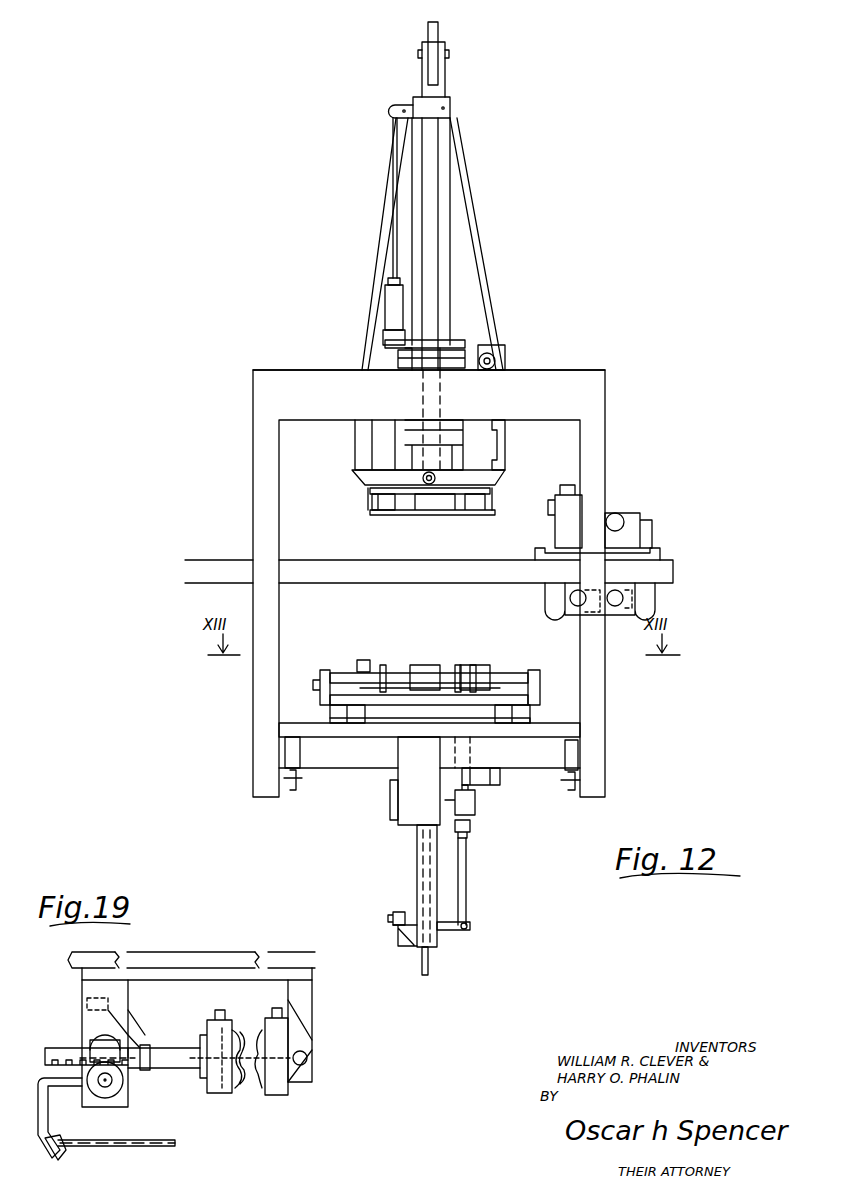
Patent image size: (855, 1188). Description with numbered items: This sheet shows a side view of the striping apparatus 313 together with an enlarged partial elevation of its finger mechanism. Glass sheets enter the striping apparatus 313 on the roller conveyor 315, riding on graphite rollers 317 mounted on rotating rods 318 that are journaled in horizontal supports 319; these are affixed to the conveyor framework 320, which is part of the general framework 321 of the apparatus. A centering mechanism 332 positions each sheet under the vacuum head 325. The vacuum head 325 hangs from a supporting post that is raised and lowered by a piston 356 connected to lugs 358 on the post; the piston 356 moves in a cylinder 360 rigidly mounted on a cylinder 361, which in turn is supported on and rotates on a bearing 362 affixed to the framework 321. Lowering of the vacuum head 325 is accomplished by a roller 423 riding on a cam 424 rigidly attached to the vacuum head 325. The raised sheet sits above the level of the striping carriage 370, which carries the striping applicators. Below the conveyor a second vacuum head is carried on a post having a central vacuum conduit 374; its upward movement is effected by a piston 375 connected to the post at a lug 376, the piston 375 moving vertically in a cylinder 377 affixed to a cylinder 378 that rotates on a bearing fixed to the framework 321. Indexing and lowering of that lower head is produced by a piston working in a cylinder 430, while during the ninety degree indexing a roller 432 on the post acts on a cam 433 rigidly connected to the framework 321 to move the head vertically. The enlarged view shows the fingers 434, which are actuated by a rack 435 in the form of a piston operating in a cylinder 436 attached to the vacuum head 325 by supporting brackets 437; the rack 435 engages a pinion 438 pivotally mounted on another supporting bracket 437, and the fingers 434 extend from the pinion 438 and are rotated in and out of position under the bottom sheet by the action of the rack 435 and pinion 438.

In FIG. 12, the striping apparatus 313 is at (250, 455).
In FIG. 12, the general framework 321 is at (568, 410).
In FIG. 12, the lugs 358 is at (413, 108).
In FIG. 12, the piston 356 is at (393, 172).
In FIG. 12, the cylinder 360 is at (385, 308).
In FIG. 12, the bearing 362 is at (440, 390).
In FIG. 12, the cylinder 361 is at (455, 448).
In FIG. 12, the cam 424 is at (460, 480).
In FIG. 12, the vacuum head 325 is at (480, 503).
In FIG. 19, the vacuum head 325 is at (107, 966).
In FIG. 12, the roller 423 is at (370, 492).
In FIG. 12, the cylinder 436 is at (457, 514).
In FIG. 19, the cylinder 436 is at (238, 1088).
In FIG. 12, the striping carriage 370 is at (643, 545).
In FIG. 12, the roller conveyor 315 is at (538, 708).
In FIG. 12, the horizontal supports 319 is at (320, 690).
In FIG. 12, the rotating rods 318 is at (506, 678).
In FIG. 12, the conveyor framework 320 is at (330, 712).
In FIG. 12, the graphite rollers 317 is at (460, 668).
In FIG. 12, the centering mechanism 332 is at (429, 660).
In FIG. 12, the cam 433 is at (400, 824).
In FIG. 12, the cylinder 430 is at (480, 788).
In FIG. 12, the cylinder 378 is at (468, 802).
In FIG. 12, the cylinder 377 is at (471, 826).
In FIG. 12, the piston 375 is at (466, 868).
In FIG. 12, the lug 376 is at (448, 930).
In FIG. 12, the vacuum conduit 374 is at (428, 960).
In FIG. 12, the roller 432 is at (398, 912).
In FIG. 19, the supporting brackets 437 is at (293, 990).
In FIG. 19, the pinion 438 is at (102, 1058).
In FIG. 19, the rack 435 is at (130, 1064).
In FIG. 19, the fingers 434 is at (58, 1142).